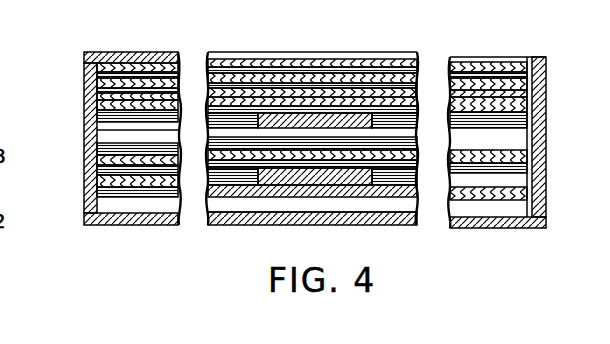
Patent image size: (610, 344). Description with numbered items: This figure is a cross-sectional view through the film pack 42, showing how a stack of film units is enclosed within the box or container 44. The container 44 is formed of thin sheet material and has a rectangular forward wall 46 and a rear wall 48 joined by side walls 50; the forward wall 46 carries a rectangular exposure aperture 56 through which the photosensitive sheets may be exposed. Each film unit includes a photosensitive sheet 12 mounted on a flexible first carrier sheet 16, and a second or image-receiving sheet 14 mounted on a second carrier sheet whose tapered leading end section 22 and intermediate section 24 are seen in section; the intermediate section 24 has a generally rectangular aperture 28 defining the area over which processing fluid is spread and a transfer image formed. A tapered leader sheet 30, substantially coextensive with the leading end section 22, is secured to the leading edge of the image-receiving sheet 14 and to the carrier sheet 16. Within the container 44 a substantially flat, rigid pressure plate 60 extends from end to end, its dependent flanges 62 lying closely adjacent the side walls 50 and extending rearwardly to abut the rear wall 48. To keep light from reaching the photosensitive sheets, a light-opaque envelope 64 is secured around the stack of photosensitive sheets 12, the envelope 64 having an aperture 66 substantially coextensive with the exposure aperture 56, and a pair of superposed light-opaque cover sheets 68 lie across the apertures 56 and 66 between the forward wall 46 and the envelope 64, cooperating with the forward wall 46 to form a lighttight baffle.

The photosensitive sheet 12 is at (188, 88).
The second or image-receiving sheet 14 is at (185, 155).
The first carrier sheet 16 is at (420, 105).
The tapered leading end section 22 is at (308, 178).
The intermediate section 24 is at (118, 187).
The aperture 28 is at (115, 152).
The tapered leader sheet 30 is at (300, 132).
The film pack 42 is at (78, 141).
The box or container 44 is at (550, 229).
The forward wall 46 is at (355, 54).
The rear wall 48 is at (311, 226).
The side walls 50 is at (84, 81).
The exposure aperture 56 is at (121, 56).
The pressure plate 60 is at (205, 100).
The flanges 62 is at (96, 157).
The envelope 64 is at (97, 76).
The aperture 66 is at (113, 72).
The cover sheets 68 is at (418, 72).